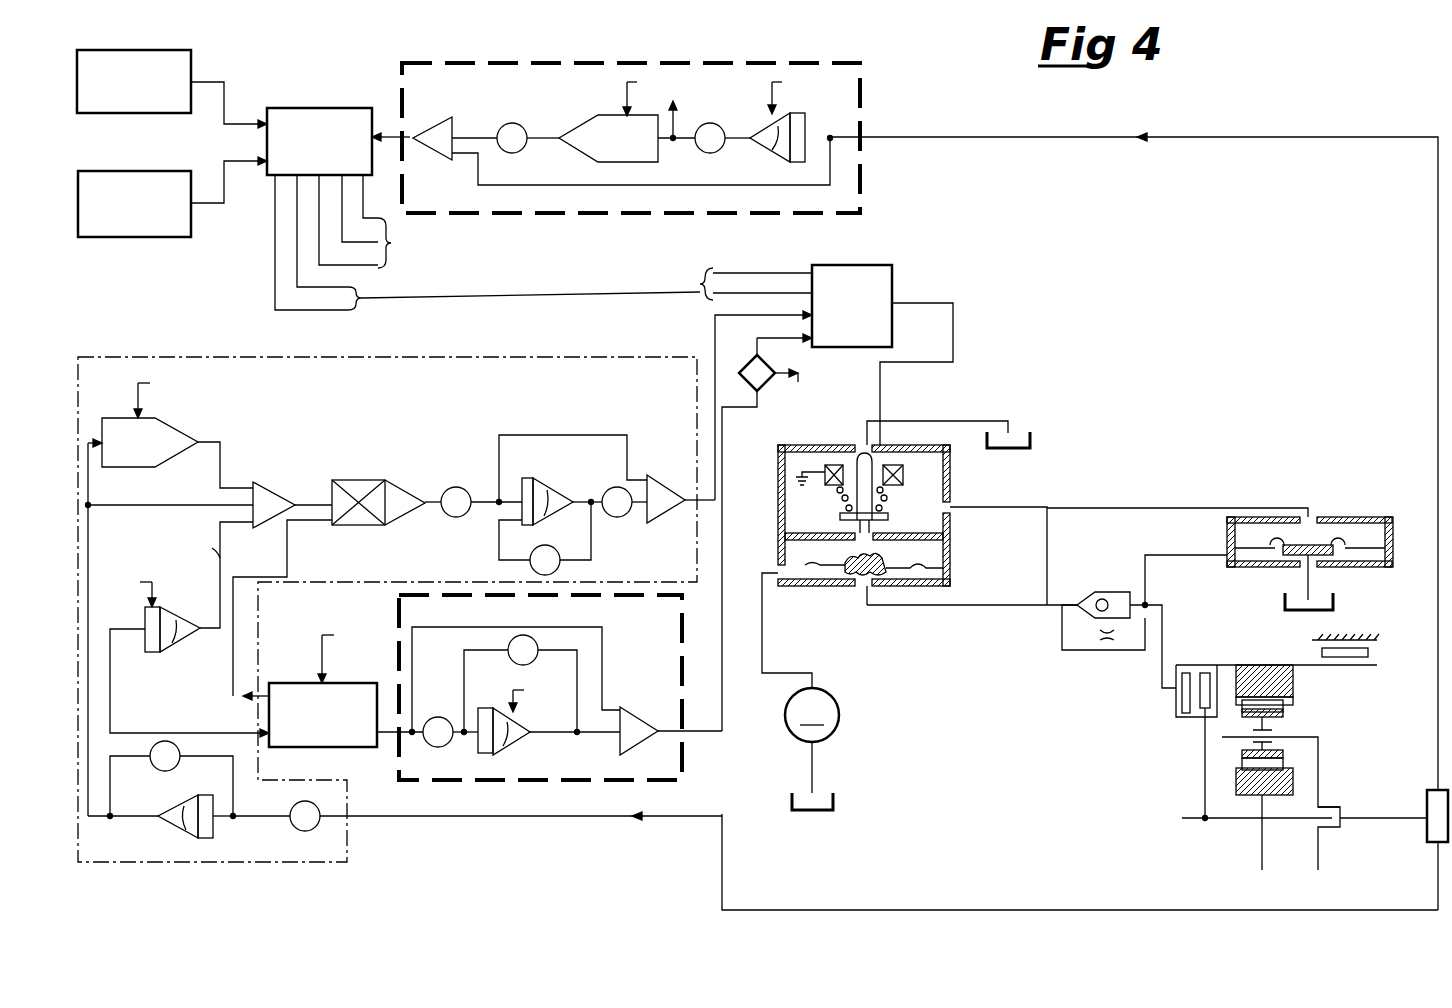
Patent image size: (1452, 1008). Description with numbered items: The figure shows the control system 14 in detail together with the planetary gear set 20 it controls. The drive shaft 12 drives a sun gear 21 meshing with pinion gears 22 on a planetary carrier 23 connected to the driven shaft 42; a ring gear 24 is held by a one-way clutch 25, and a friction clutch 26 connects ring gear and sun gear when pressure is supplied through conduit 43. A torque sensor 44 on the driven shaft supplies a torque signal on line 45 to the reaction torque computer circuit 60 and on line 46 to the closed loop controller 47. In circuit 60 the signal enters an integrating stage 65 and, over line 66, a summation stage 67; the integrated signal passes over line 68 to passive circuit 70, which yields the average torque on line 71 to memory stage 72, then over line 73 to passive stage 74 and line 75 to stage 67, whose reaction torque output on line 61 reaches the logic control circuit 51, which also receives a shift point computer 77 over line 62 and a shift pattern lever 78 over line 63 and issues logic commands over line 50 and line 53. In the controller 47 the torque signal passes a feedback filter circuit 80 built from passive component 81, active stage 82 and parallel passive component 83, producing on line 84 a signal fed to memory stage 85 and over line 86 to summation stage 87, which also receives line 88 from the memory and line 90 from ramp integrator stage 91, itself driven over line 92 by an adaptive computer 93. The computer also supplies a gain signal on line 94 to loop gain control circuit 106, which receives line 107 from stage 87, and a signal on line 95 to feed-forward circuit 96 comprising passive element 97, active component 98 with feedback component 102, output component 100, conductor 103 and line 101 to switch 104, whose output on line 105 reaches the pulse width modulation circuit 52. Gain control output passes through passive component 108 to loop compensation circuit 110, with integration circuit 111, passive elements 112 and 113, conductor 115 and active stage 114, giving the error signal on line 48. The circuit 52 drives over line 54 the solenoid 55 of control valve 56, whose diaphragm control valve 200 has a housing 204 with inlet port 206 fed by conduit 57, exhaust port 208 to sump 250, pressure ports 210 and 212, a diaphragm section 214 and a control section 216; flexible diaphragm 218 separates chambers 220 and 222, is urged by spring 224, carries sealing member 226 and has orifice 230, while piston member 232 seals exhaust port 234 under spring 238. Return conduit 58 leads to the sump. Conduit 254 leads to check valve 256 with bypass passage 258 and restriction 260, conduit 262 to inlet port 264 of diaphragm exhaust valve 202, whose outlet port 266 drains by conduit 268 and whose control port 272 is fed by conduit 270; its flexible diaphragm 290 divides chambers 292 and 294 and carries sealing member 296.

The drive shaft 12 is at (1224, 822).
The control system 14 is at (886, 50).
The planetary gear set 20 is at (1387, 634).
The sun gear 21 is at (1260, 860).
The pinion gears 22 is at (1276, 736).
The planetary carrier 23 is at (1320, 748).
The ring gear 24 is at (1294, 688).
The one-way clutch 25 is at (1370, 653).
The friction clutch 26 is at (1174, 719).
The driven shaft 42 is at (1364, 816).
The conduit 43 is at (1164, 614).
The torque sensor 44 is at (1426, 832).
The line 45 is at (1437, 332).
The line 46 is at (936, 908).
The closed loop controller 47 is at (347, 836).
The line 48 is at (713, 332).
The line 50 is at (392, 243).
The logic control circuit 51 is at (288, 108).
The pulse width modulation circuit 52 is at (893, 283).
The line 53 is at (515, 292).
The line 54 is at (918, 362).
The solenoid 55 is at (902, 460).
The electro-hydraulic control valve 56 is at (1058, 448).
The conduit 57 is at (815, 688).
The conduit 58 is at (992, 420).
The reaction torque computer circuit 60 is at (862, 78).
The line 61 is at (390, 130).
The line 62 is at (225, 98).
The line 63 is at (225, 185).
The integrating stage 65 is at (805, 120).
The line 66 is at (735, 182).
The summation stage 67 is at (442, 120).
The line 68 is at (742, 132).
The passive circuit 70 is at (712, 122).
The line 71 is at (678, 116).
The memory stage 72 is at (612, 113).
The line 73 is at (548, 134).
The passive stage 74 is at (512, 122).
The line 75 is at (480, 134).
The shift point computer 77 is at (192, 60).
The shift pattern lever 78 is at (192, 222).
The feedback filter circuit 80 is at (322, 803).
The passive component 81 is at (294, 806).
The active stage 82 is at (176, 808).
The passive component 83 is at (178, 766).
The line 84 is at (90, 533).
The memory stage 85 is at (146, 468).
The line 86 is at (138, 508).
The summation stage 87 is at (272, 482).
The line 88 is at (222, 452).
The line 90 is at (220, 574).
The active stage 91 is at (170, 653).
The line 92 is at (112, 694).
The adaptive computer 93 is at (377, 683).
The line 94 is at (288, 548).
The line 95 is at (386, 736).
The feed-forward circuit 96 is at (636, 600).
The passive element 97 is at (438, 748).
The active component 98 is at (510, 748).
The active component 100 is at (632, 756).
The line 101 is at (710, 738).
The passive feedback component 102 is at (514, 658).
The conductor 103 is at (424, 632).
The active element 104 is at (748, 371).
The line 105 is at (770, 334).
The loop gain control circuit 106 is at (355, 526).
The line 107 is at (310, 503).
The passive component 108 is at (456, 487).
The loop compensation circuit 110 is at (561, 428).
The integration circuit 111 is at (552, 484).
The passive element 112 is at (548, 544).
The passive element 113 is at (612, 518).
The active stage 114 is at (668, 524).
The conductor 115 is at (500, 452).
The diaphragm control valve 200 is at (968, 473).
The diaphragm exhaust valve 202 is at (1372, 502).
The housing 204 is at (774, 436).
The inlet port 206 is at (776, 570).
The exhaust port 208 is at (858, 440).
The pressure port 210 is at (860, 590).
The pressure port 212 is at (952, 507).
The diaphragm section 214 is at (950, 553).
The control section 216 is at (927, 475).
The flexible diaphragm 218 is at (942, 588).
The chamber 220 is at (940, 572).
The chamber 222 is at (950, 534).
The spring 224 is at (892, 532).
The sealing member 226 is at (848, 586).
The orifice 230 is at (802, 586).
The piston member 232 is at (856, 452).
The exhaust port 234 is at (842, 533).
The spring 238 is at (840, 497).
The fluid sump 250 is at (1034, 434).
The conduit 254 is at (1015, 608).
The check valve 256 is at (1120, 592).
The bypass passage 258 is at (1072, 652).
The restriction 260 is at (1106, 654).
The conduit 262 is at (1148, 580).
The inlet port 264 is at (1225, 550).
The outlet port 266 is at (1300, 568).
The conduit 268 is at (1296, 585).
The conduit 270 is at (1012, 508).
The control port 272 is at (1316, 516).
The flexible diaphragm 290 is at (1390, 518).
The chamber 292 is at (1334, 530).
The chamber 294 is at (1392, 566).
The sealing member 296 is at (1338, 562).